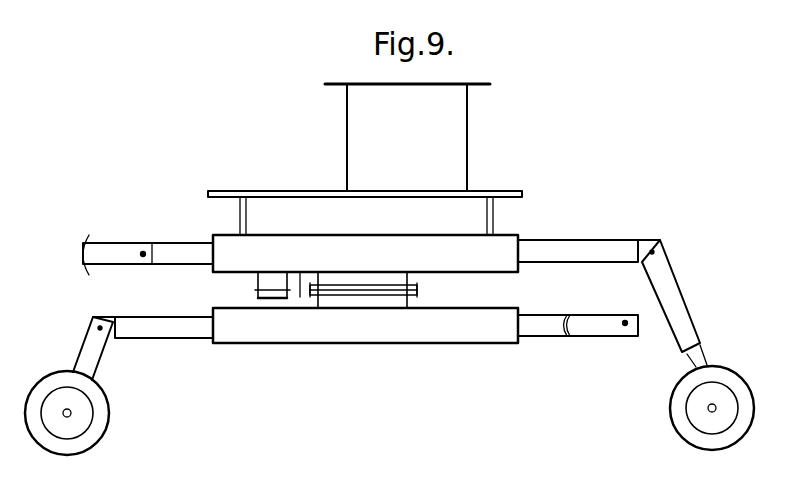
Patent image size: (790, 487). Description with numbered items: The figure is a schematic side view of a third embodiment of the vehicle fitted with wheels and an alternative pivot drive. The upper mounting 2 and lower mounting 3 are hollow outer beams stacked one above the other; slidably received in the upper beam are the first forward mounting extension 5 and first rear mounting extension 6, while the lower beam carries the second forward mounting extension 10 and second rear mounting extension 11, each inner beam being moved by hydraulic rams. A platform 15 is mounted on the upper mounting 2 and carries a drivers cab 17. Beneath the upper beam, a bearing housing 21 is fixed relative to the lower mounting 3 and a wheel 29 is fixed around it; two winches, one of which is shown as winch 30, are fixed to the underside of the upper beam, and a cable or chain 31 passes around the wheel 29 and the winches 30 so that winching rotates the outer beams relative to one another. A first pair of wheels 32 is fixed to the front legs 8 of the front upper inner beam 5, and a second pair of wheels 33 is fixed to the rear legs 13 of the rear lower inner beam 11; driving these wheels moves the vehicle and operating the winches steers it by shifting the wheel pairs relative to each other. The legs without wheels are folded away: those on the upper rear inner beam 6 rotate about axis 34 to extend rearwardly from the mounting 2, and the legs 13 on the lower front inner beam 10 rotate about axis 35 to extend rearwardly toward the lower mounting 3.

The upper mounting 2 is at (498, 250).
The lower mounting 3 is at (440, 333).
The first forward mounting extension 5 is at (588, 245).
The first rear mounting extension 6 is at (182, 246).
The leg 8 is at (678, 302).
The second forward mounting extension 10 is at (538, 327).
The second rear mounting extension 11 is at (178, 327).
The leg 13 is at (88, 352).
The platform 15 is at (510, 190).
The drivers cab 17 is at (452, 130).
The bearing housing 21 is at (340, 300).
The wheel 29 is at (416, 298).
The winch 30 is at (270, 300).
The cable or chain 31 is at (300, 298).
The first pair of wheels 32 is at (677, 410).
The second pair of wheels 33 is at (102, 417).
The axis 34 is at (141, 254).
The axis 35 is at (625, 324).